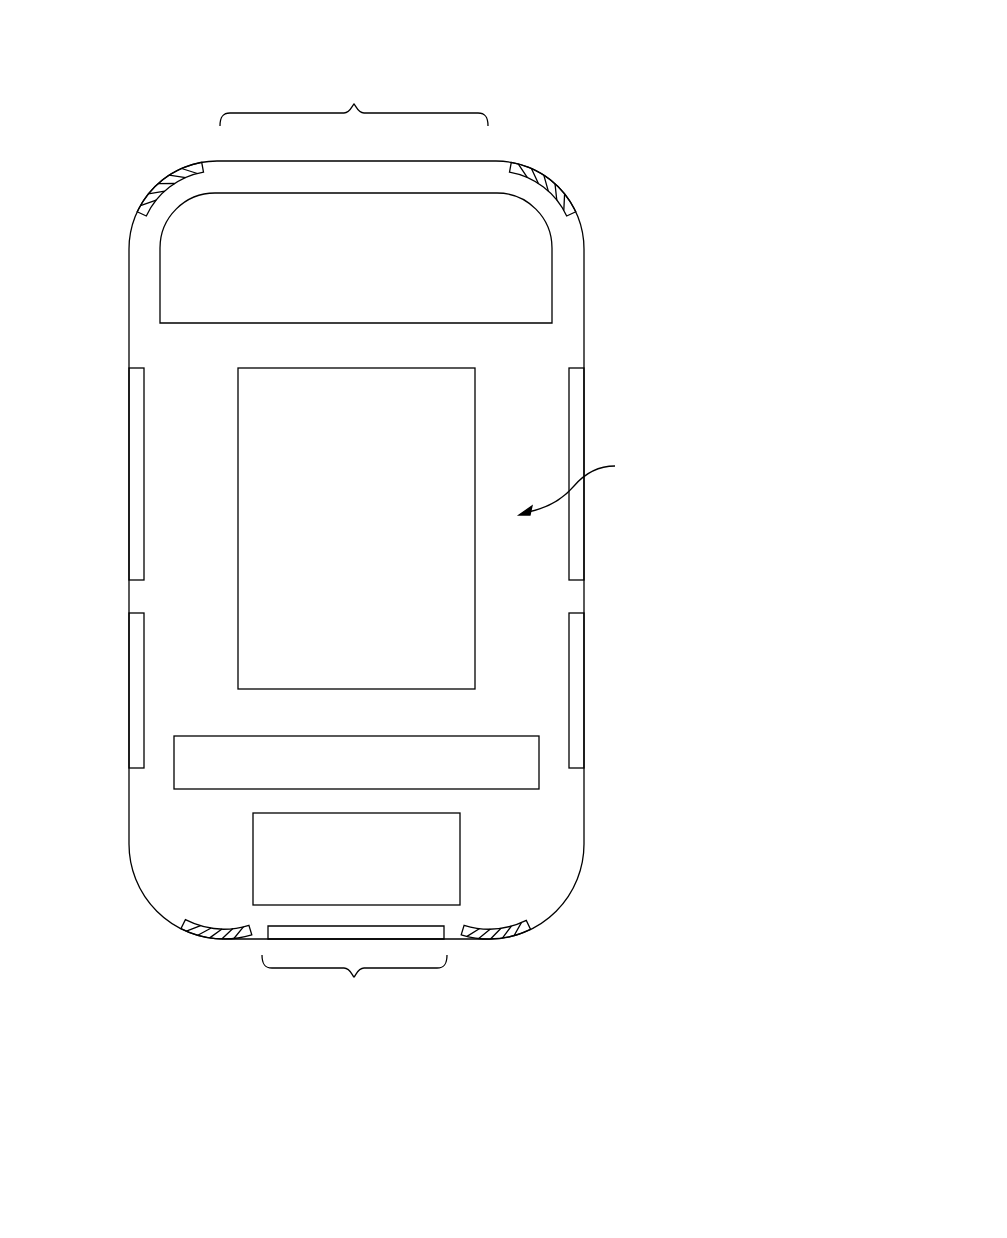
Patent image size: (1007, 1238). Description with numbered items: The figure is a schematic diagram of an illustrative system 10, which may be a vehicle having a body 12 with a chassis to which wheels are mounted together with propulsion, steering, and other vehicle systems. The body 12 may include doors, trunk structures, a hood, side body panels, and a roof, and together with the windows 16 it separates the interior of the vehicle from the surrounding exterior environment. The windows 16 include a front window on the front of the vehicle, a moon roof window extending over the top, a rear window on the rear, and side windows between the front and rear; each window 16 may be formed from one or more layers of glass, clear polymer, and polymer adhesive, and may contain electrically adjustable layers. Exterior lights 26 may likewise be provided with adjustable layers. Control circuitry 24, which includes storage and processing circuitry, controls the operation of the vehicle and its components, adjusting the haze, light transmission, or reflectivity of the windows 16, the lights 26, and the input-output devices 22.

The system 10 is at (621, 80).
The body 12 is at (568, 828).
The window 16 is at (538, 258).
The input-output devices 22 is at (206, 790).
The control circuitry 24 is at (460, 843).
The exterior lights 26 is at (165, 195).